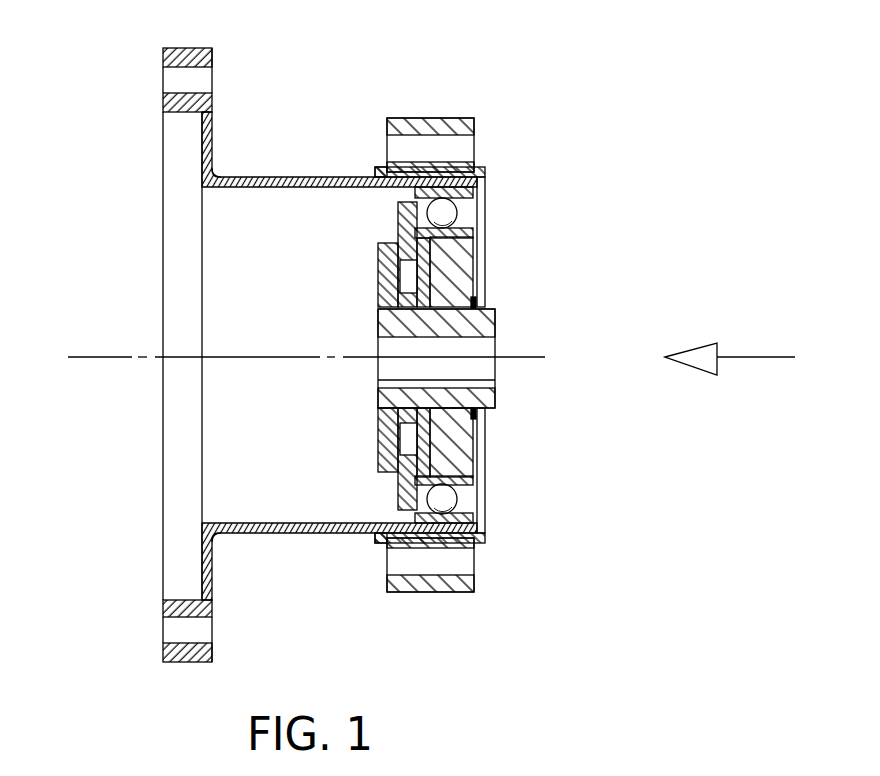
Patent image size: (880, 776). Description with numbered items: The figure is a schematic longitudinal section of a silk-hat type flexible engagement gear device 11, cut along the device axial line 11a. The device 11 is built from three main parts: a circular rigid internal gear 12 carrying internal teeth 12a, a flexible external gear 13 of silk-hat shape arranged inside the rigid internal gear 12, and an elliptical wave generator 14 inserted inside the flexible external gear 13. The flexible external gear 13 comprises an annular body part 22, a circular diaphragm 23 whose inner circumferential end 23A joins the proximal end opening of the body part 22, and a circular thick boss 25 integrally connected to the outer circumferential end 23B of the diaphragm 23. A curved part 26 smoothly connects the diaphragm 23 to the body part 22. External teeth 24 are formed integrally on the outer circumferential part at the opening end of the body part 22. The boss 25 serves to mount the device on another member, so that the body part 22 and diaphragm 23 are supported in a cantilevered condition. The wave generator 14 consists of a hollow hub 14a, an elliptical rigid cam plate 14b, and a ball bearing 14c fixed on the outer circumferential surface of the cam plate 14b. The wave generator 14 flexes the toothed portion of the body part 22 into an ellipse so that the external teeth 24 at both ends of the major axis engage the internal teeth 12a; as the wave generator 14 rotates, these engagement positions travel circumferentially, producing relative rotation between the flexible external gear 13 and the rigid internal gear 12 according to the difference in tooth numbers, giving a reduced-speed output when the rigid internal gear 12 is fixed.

The flexible engagement gear device 11 is at (478, 93).
The device axial line 11a is at (90, 360).
The rigid internal gear 12 is at (468, 336).
The internal teeth 12a is at (368, 173).
The flexible external gear 13 is at (262, 337).
The wave generator 14 is at (502, 358).
The hollow hub 14a is at (495, 323).
The elliptical rigid cam plate 14b is at (453, 448).
The ball bearing 14c is at (445, 500).
The body part 22 is at (302, 189).
The diaphragm 23 is at (174, 352).
The inner circumferential end 23A is at (202, 168).
The outer circumferential end 23B is at (200, 122).
The external teeth 24 is at (476, 163).
The boss 25 is at (212, 80).
The curved part 26 is at (215, 177).